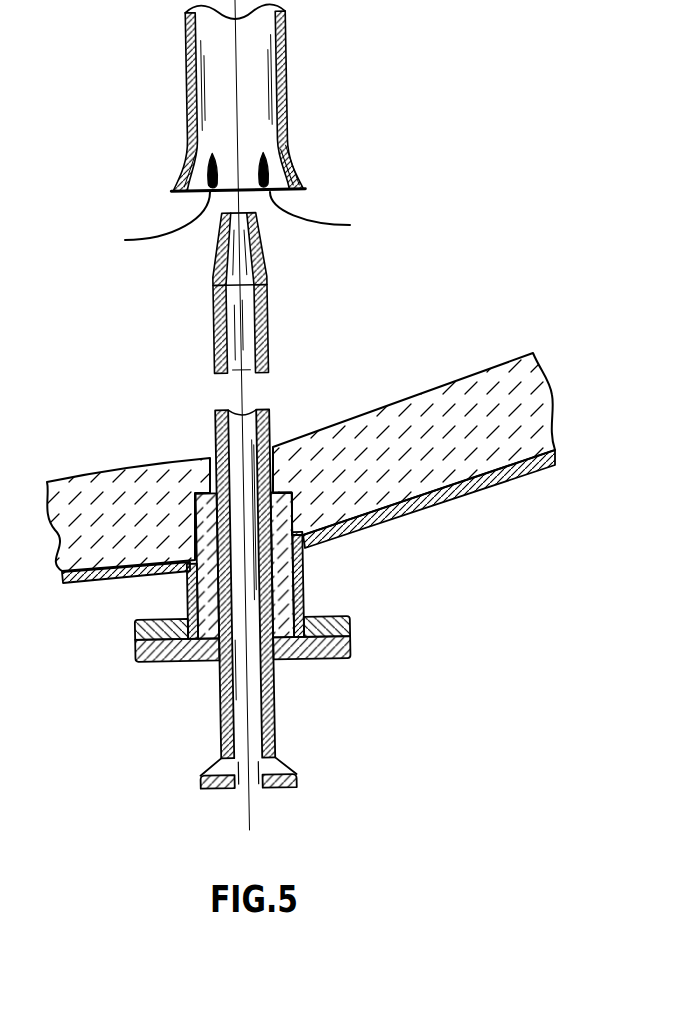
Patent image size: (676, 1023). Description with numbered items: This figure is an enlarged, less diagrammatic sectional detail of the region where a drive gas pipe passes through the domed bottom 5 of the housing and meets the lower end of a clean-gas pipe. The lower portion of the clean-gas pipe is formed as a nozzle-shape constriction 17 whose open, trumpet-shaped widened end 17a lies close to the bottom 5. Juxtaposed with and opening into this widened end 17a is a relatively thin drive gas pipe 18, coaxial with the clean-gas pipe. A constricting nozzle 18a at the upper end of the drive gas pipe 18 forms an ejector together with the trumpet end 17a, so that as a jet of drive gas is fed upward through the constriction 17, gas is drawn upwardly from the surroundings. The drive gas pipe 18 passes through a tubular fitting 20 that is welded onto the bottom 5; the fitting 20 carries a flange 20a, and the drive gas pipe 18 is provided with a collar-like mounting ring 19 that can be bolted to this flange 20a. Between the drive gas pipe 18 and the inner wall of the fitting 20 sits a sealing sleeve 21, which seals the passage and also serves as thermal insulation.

The domed bottom 5 is at (530, 478).
The nozzle-shape constriction 17 is at (257, 72).
The trumpet-shaped widened end 17a is at (292, 174).
The drive gas pipe 18 is at (255, 327).
The constricting nozzle 18a is at (261, 256).
The mounting ring 19 is at (353, 650).
The tubular fitting 20 is at (303, 567).
The flange 20a is at (353, 622).
The sealing sleeve 21 is at (305, 597).